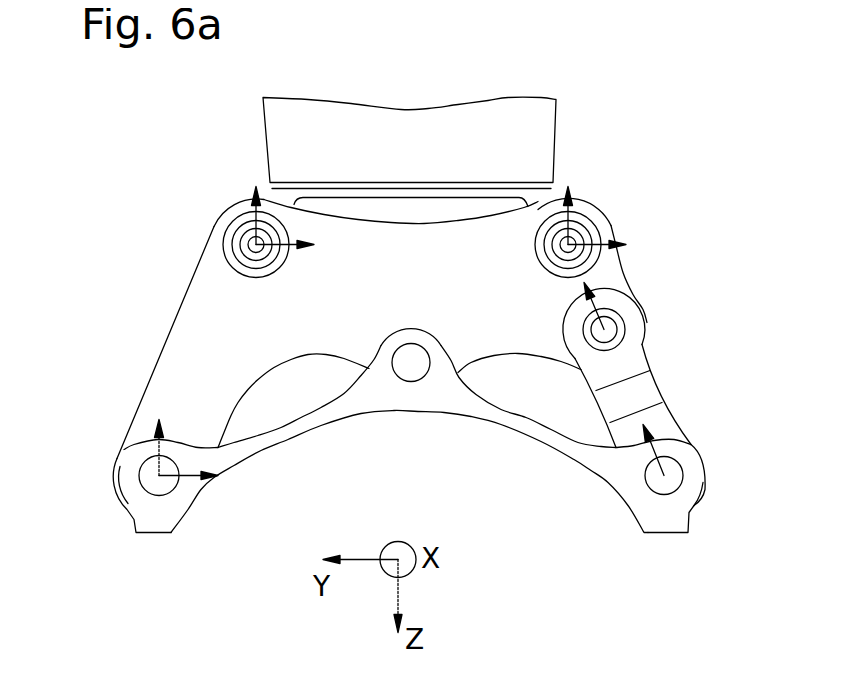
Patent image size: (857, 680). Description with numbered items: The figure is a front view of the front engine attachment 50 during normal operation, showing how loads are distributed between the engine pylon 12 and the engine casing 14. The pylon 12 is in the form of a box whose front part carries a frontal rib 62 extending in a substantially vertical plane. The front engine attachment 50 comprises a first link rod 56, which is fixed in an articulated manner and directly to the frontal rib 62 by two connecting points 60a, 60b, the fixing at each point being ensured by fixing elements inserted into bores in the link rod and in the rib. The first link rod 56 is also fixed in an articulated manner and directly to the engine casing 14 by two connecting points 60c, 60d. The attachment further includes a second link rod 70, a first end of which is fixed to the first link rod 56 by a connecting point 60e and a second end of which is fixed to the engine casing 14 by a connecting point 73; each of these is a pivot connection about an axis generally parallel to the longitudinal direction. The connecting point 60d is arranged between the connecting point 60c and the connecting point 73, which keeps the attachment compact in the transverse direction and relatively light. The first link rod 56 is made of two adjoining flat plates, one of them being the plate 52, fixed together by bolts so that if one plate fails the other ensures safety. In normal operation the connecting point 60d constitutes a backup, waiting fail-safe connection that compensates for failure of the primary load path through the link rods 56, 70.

The engine pylon 12 is at (535, 120).
The engine casing 14 is at (618, 468).
The front engine attachment 50 is at (700, 137).
The plate 52 is at (183, 374).
The first link rod 56 is at (180, 315).
The connecting point 60a is at (250, 242).
The connecting point 60b is at (575, 240).
The connecting point 60c is at (153, 463).
The connecting point 60d is at (410, 360).
The connecting point 60e is at (607, 323).
The frontal rib 62 is at (537, 197).
The second link rod 70 is at (648, 388).
The connecting point 73 is at (667, 473).